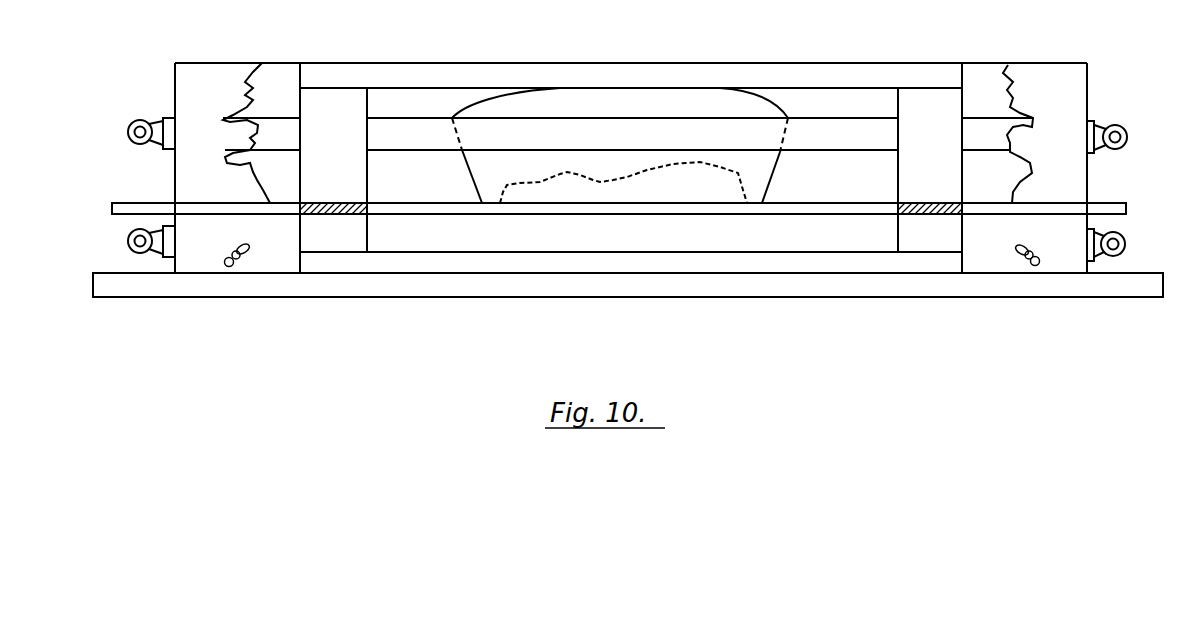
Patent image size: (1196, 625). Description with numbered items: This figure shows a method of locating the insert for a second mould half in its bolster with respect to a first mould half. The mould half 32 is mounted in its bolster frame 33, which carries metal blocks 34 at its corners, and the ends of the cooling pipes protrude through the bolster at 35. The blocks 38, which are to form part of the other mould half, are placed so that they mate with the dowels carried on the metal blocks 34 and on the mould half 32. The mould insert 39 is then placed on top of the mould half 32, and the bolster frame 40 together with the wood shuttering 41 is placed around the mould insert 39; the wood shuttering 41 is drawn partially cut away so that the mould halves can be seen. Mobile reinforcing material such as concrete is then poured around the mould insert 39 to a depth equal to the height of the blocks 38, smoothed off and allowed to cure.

The mould half 32 is at (690, 190).
The bolster frame 33 is at (1062, 267).
The metal blocks 34 is at (342, 233).
The ends of the cooling pipes 35 is at (230, 265).
The blocks 38 is at (350, 100).
The mould insert 39 is at (692, 105).
The bolster frame 40 is at (1070, 96).
The wood shuttering 41 is at (207, 84).